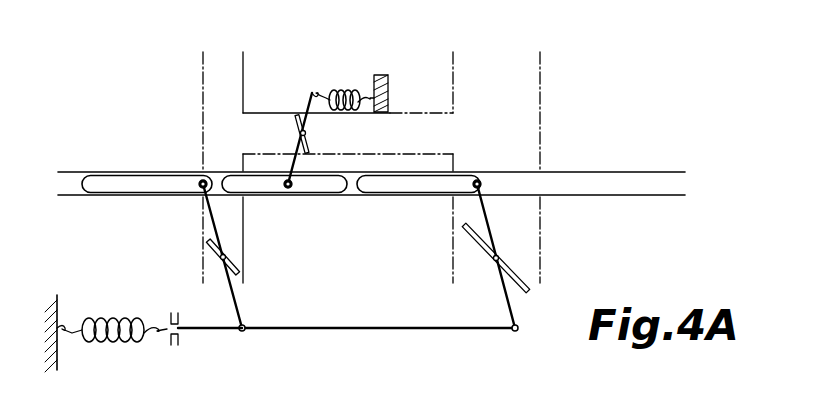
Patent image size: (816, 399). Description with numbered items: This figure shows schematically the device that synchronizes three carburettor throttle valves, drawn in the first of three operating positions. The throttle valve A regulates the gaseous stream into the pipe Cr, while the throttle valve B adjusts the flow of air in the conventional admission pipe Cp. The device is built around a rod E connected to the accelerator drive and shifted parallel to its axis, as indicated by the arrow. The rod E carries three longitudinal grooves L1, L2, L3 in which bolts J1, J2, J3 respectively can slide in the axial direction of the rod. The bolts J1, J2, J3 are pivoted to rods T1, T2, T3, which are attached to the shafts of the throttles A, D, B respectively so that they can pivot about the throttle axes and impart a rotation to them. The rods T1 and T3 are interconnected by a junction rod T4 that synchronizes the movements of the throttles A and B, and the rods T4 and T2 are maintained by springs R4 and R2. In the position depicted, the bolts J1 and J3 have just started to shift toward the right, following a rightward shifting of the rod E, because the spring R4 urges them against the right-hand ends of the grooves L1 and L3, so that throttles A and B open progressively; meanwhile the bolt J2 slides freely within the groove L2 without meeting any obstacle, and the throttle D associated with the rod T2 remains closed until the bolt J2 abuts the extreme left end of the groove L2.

The rod E is at (543, 184).
The pipe Cr is at (233, 84).
The conventional admission pipe Cp is at (508, 84).
The longitudinal groove L1 is at (118, 181).
The longitudinal groove L2 is at (312, 190).
The longitudinal groove L3 is at (383, 181).
The bolt J1 is at (205, 177).
The bolt J2 is at (285, 180).
The bolt J3 is at (478, 177).
The rod T1 is at (237, 306).
The rod T2 is at (311, 101).
The rod T3 is at (489, 227).
The junction rod T4 is at (355, 331).
The throttle valve A is at (212, 254).
The throttle valve B is at (524, 271).
The throttle D is at (314, 146).
The spring R2 is at (338, 88).
The spring R4 is at (117, 342).